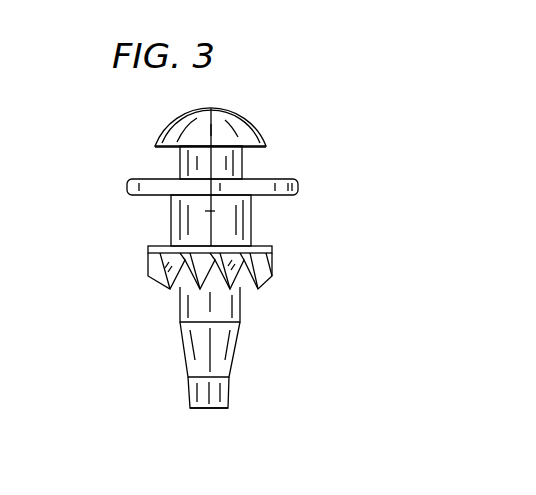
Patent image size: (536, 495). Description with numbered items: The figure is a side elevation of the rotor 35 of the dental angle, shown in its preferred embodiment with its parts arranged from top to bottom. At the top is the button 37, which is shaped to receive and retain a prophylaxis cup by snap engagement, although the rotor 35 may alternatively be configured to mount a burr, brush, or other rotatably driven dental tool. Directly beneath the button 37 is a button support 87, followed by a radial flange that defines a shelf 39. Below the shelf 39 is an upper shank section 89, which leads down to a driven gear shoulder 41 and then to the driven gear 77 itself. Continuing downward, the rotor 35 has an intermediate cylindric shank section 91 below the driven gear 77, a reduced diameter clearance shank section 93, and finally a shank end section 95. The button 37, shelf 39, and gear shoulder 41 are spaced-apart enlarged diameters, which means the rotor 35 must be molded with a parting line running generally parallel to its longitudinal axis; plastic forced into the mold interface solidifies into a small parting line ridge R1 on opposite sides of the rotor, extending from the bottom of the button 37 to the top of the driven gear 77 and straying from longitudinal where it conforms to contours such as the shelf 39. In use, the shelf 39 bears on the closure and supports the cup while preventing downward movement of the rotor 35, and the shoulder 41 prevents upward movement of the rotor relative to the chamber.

The rotor 35 is at (135, 231).
The button 37 is at (232, 111).
The button support 87 is at (243, 164).
The shelf 39 is at (298, 188).
The upper shank section 89 is at (252, 215).
The parting line ridge R1 is at (210, 211).
The driven gear shoulder 41 is at (272, 249).
The driven gear 77 is at (271, 281).
The intermediate cylindric shank section 91 is at (240, 313).
The reduced diameter clearance shank section 93 is at (232, 365).
The shank end section 95 is at (229, 406).